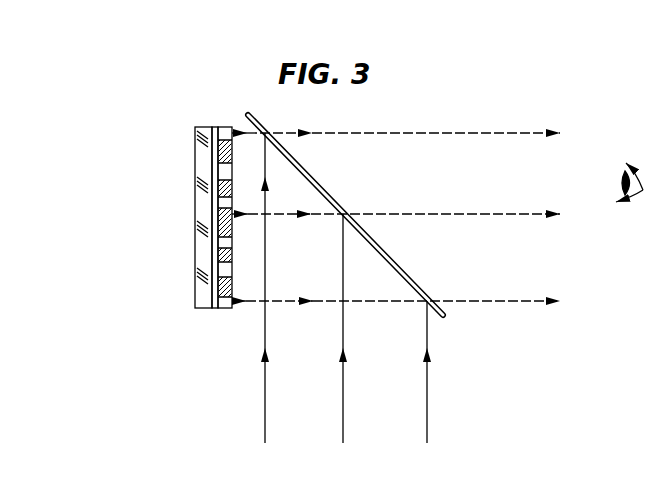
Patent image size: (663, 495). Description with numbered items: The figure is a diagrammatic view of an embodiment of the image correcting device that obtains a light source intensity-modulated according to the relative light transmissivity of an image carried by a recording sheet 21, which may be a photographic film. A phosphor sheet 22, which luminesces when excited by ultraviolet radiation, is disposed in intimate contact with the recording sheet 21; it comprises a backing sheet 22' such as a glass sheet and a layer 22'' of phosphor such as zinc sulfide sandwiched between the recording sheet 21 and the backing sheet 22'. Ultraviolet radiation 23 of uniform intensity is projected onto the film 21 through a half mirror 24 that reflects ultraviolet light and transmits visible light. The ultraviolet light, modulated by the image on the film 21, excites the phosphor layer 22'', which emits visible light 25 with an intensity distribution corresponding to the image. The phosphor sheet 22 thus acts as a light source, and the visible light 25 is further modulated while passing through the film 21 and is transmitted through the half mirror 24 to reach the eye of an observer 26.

The recording sheet 21 is at (225, 310).
The phosphor sheet 22 is at (173, 217).
The backing sheet 22' is at (176, 218).
The layer of phosphor 22'' is at (194, 239).
The ultraviolet radiation 23 is at (343, 392).
The half mirror 24 is at (409, 279).
The visible light 25 is at (281, 217).
The observer 26 is at (632, 203).